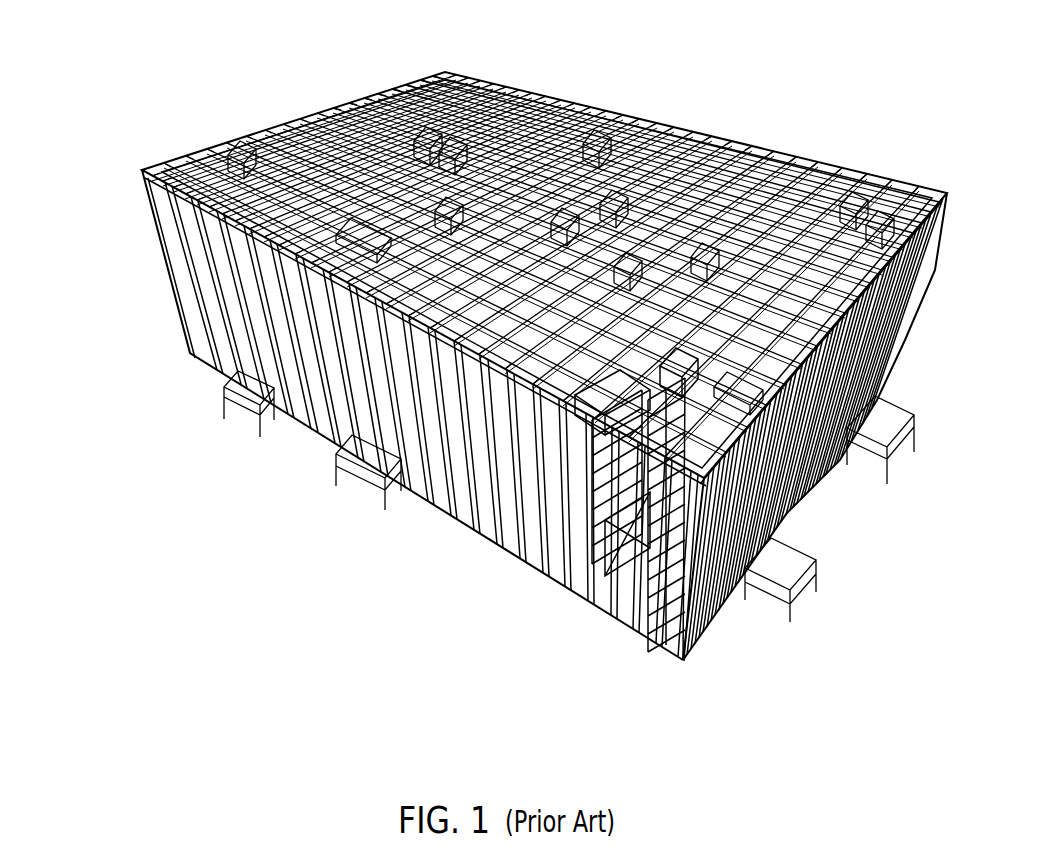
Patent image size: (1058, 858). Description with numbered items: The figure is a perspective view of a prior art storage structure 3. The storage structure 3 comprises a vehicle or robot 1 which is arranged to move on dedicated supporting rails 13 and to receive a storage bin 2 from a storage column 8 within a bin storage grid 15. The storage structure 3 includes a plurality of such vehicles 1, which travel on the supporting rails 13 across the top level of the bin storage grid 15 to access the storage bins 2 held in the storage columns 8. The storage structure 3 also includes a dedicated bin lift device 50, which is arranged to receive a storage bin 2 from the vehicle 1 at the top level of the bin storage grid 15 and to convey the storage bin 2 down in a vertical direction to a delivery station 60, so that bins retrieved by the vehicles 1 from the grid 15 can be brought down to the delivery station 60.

The storage structure 3 is at (110, 82).
The storage column 8 is at (430, 74).
The vehicle 1 is at (569, 102).
The storage bin 2 is at (619, 116).
The supporting rails 13 is at (735, 142).
The bin storage grid 15 is at (178, 308).
The bin lift device 50 is at (364, 390).
The delivery station 60 is at (368, 482).